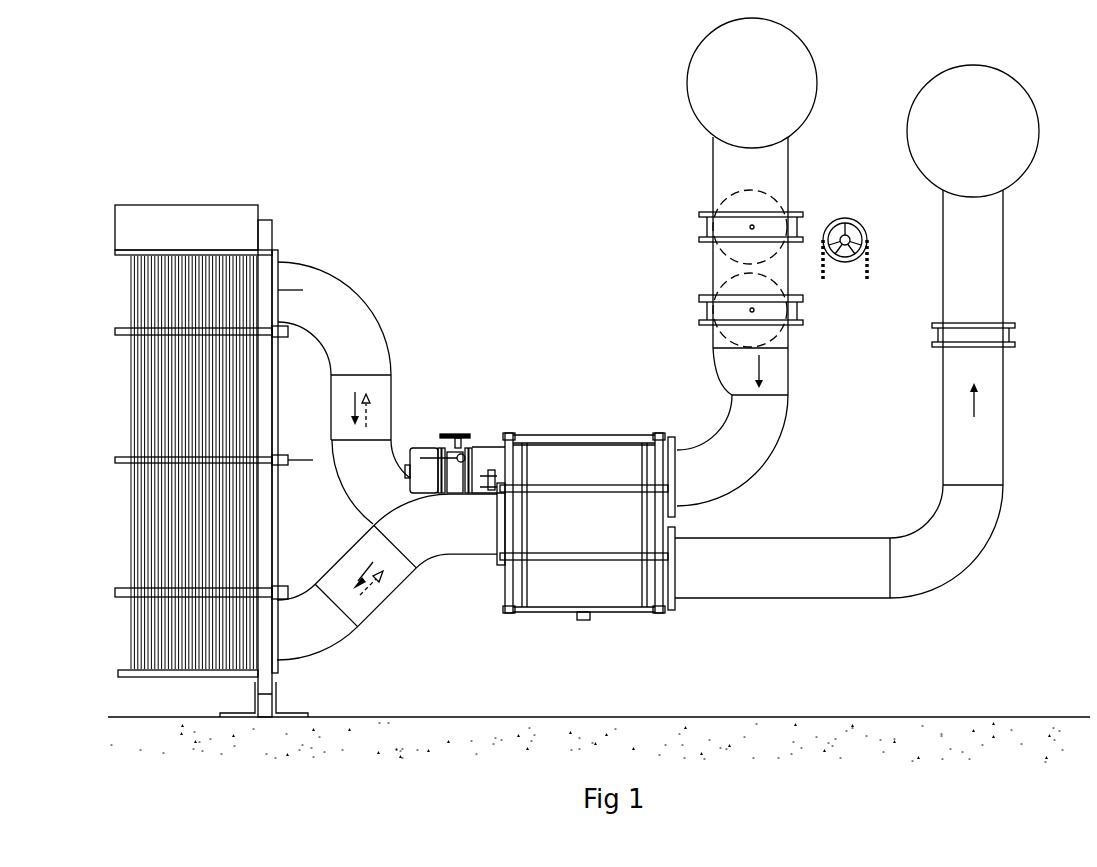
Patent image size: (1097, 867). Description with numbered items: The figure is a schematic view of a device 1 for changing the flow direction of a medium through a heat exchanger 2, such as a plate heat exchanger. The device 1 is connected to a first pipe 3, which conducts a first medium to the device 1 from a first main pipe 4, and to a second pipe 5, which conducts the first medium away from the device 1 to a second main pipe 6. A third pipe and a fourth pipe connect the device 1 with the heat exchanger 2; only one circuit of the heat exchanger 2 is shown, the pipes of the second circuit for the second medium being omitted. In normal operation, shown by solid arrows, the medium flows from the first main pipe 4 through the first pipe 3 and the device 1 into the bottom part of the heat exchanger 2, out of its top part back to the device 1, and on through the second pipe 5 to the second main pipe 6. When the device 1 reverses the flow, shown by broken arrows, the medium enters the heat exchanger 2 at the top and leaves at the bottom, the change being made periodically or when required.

The device for changing a flow direction 1 is at (638, 598).
The heat exchanger 2 is at (258, 150).
The first pipe 3 is at (732, 433).
The first main pipe 4 is at (702, 70).
The second pipe 5 is at (802, 588).
The second main pipe 6 is at (1022, 155).